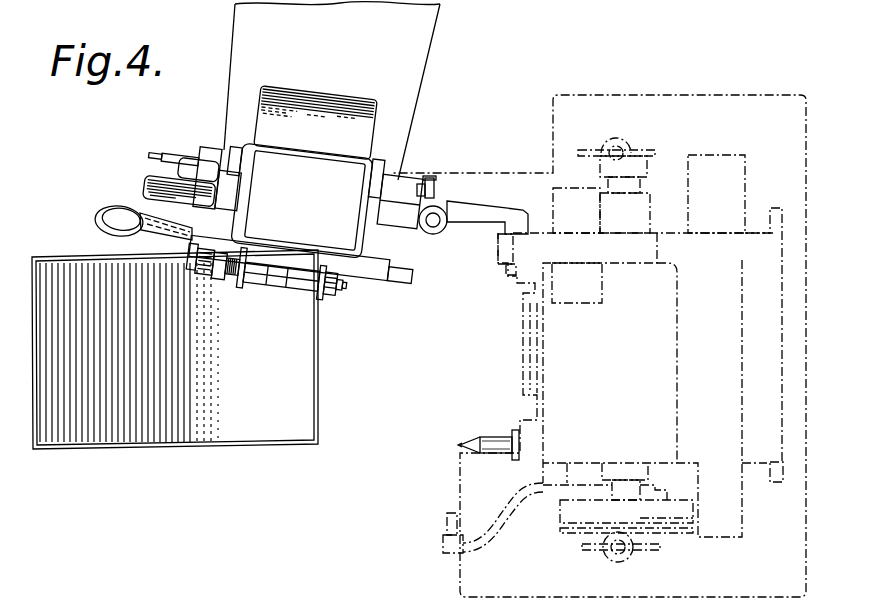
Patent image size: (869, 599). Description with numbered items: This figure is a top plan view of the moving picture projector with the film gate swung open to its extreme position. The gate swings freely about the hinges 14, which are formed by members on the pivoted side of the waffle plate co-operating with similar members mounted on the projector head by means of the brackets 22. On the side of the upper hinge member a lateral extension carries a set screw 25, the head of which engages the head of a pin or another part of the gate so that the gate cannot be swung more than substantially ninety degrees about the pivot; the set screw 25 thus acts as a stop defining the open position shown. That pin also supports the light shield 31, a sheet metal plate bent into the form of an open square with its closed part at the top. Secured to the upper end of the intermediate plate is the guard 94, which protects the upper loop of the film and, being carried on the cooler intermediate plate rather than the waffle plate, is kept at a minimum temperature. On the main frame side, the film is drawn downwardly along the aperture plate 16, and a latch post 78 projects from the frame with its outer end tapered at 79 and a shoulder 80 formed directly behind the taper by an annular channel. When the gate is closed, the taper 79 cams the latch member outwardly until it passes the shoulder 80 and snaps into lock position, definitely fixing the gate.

The light shield 31 is at (228, 96).
The guard 94 is at (315, 123).
The set screw 25 is at (428, 178).
The bracket 22 is at (492, 212).
The hinge 14 is at (438, 236).
The aperture plate 16 is at (525, 384).
The latch post 78 is at (497, 440).
The taper 79 is at (458, 445).
The shoulder 80 is at (467, 441).